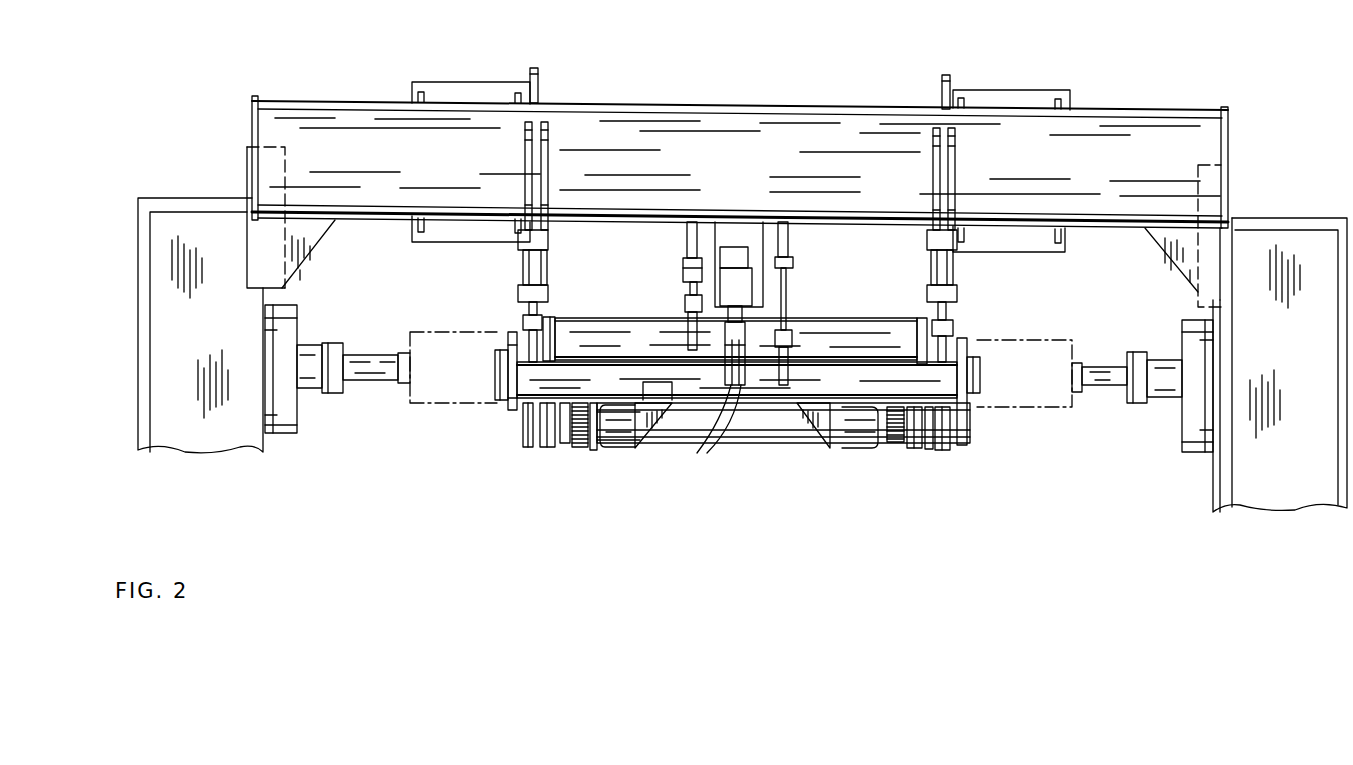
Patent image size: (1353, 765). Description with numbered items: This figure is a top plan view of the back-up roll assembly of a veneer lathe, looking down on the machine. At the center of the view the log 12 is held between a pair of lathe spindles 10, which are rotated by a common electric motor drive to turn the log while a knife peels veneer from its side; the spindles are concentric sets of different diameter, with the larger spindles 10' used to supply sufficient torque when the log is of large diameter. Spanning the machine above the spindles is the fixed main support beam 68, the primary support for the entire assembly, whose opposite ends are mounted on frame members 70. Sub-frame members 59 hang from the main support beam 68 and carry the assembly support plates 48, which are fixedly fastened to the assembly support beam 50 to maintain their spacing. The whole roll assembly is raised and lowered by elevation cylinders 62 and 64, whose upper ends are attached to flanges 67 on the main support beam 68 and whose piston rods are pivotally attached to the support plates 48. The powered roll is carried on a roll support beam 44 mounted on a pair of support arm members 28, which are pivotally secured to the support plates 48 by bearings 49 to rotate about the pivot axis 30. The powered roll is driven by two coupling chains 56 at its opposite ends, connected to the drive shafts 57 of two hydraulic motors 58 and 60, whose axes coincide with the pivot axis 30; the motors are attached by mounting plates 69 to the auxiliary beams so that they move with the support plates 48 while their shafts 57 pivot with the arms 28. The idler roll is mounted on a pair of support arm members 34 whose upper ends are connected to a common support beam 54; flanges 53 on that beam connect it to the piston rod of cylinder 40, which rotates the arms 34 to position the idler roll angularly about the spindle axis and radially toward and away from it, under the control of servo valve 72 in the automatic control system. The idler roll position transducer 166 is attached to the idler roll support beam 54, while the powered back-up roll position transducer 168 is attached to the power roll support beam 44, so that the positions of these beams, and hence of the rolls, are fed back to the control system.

The lathe spindles 10 is at (735, 373).
The larger spindles 10' is at (739, 347).
The log 12 is at (430, 410).
The support arm members 28 is at (545, 452).
The pivot axis 30 is at (750, 425).
The support arm members 34 is at (508, 340).
The cylinder 40 is at (785, 300).
The roll support beam 44 is at (615, 328).
The assembly support plates 48 is at (548, 70).
The bearings 49 is at (562, 450).
The assembly support beam 50 is at (757, 93).
The flanges 53 is at (708, 452).
The support beam 54 is at (520, 375).
The coupling chains 56 is at (583, 450).
The drive shafts 57 is at (598, 450).
The hydraulic motor 58 is at (630, 450).
The sub-frame 59 is at (470, 240).
The hydraulic motor 60 is at (850, 450).
The elevation cylinder 62 is at (953, 272).
The elevation cylinder 64 is at (548, 262).
The flanges 67 is at (548, 160).
The main support beam 68 is at (328, 118).
The mounting plates 69 is at (607, 452).
The frame members 70 is at (135, 370).
The servo valve 72 is at (742, 248).
The idler roll position transducer cylinder 166 is at (790, 248).
The powered back-up roll position transducer cylinder 168 is at (690, 246).